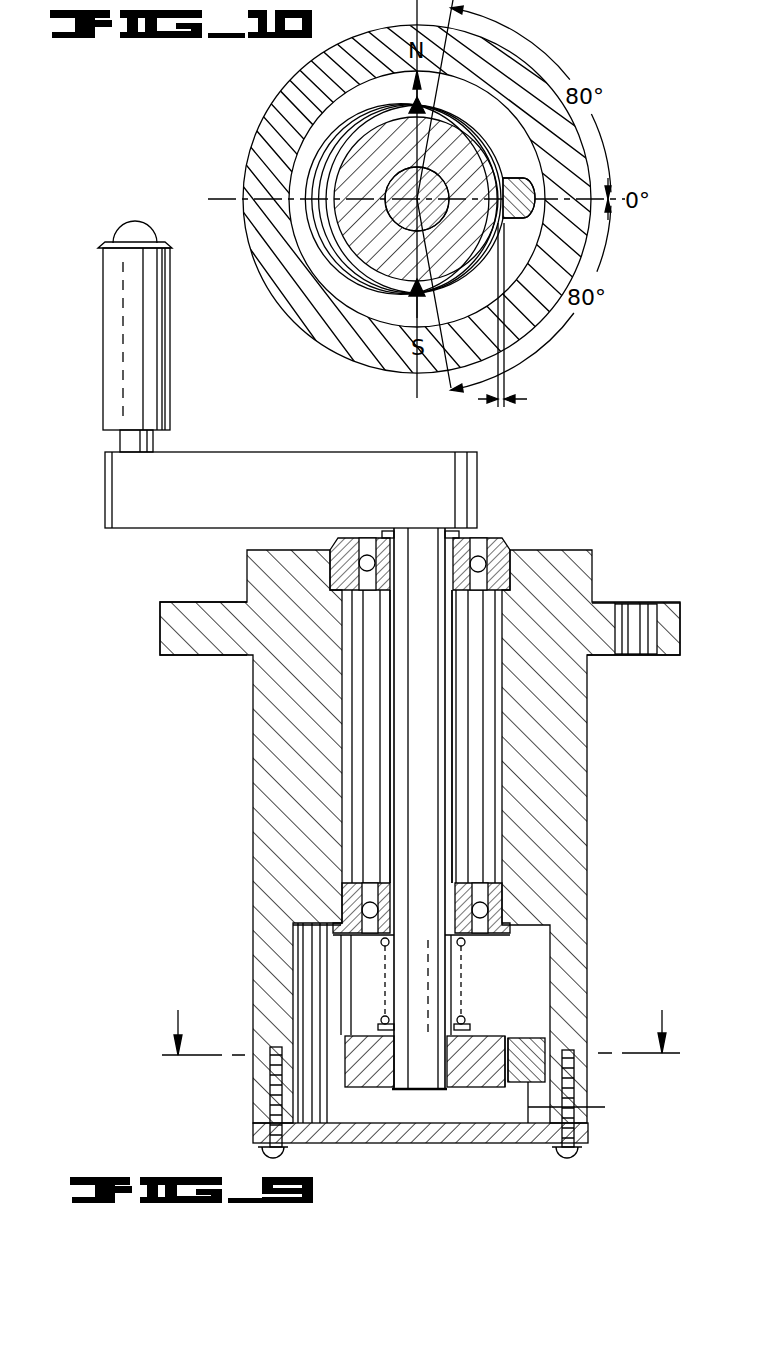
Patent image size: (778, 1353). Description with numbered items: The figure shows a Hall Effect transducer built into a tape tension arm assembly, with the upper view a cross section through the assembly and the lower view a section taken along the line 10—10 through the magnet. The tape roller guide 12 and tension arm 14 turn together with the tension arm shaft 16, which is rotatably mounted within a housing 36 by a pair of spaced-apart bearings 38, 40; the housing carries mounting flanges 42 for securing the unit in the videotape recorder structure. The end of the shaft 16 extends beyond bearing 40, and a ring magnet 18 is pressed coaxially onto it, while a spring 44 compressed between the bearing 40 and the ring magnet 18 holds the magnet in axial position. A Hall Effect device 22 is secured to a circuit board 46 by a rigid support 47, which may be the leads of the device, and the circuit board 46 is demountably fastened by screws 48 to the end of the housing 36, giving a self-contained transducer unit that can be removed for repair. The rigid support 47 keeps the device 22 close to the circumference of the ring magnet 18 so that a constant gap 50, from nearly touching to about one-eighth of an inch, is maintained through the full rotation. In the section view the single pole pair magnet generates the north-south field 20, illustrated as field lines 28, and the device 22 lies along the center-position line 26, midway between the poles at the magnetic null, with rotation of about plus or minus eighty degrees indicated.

In FIG. 9, the angular position sensing system / section line 10 is at (419, 1032).
In FIG. 9, the tape roller guide 12 is at (172, 345).
In FIG. 9, the tension arm 14 is at (293, 452).
In FIG. 10, the tension arm shaft 16 is at (397, 178).
In FIG. 9, the tension arm shaft 16 is at (447, 733).
In FIG. 10, the ring magnet 18 is at (350, 177).
In FIG. 9, the ring magnet 18 is at (493, 1037).
In FIG. 10, the magnetic field 20 is at (388, 69).
In FIG. 10, the Hall Effect device 22 is at (535, 212).
In FIG. 9, the Hall Effect device 22 is at (543, 1047).
In FIG. 10, the line 26 is at (220, 197).
In FIG. 10, the magnetic field 28 is at (502, 158).
In FIG. 9, the housing 36 is at (588, 773).
In FIG. 9, the bearing 38 is at (500, 540).
In FIG. 9, the bearing 40 is at (490, 937).
In FIG. 9, the mounting flanges 42 is at (168, 657).
In FIG. 9, the spring 44 is at (462, 1007).
In FIG. 9, the circuit board 46 is at (357, 1145).
In FIG. 9, the rigid support 47 is at (605, 1107).
In FIG. 9, the screws 48 is at (574, 1155).
In FIG. 10, the gap 50 is at (527, 398).
In FIG. 9, the gap 50 is at (507, 1088).